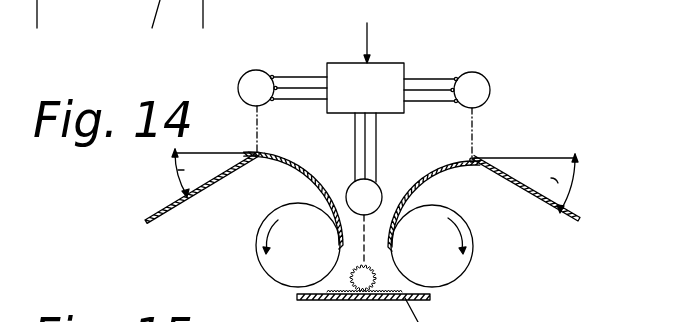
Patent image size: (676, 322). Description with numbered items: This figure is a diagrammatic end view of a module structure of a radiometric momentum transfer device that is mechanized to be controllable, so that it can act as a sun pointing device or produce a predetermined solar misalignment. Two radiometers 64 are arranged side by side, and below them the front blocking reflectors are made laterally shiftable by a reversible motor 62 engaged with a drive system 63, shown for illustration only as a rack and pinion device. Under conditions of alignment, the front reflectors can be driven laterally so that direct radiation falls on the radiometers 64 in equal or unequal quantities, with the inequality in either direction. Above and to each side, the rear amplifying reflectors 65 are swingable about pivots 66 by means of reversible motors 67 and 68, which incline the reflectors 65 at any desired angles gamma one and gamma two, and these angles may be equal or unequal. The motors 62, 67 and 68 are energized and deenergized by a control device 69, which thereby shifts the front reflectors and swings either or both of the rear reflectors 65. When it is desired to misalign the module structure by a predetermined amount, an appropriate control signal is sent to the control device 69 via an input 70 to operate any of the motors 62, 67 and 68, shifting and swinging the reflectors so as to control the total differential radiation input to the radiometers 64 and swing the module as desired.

The reversible motor 62 is at (380, 192).
The drive system 63 is at (353, 284).
The radiometers 64 is at (268, 262).
The rear amplifying reflectors 65 is at (173, 214).
The pivots 66 is at (257, 151).
The reversible motor 67 is at (247, 69).
The reversible motor 68 is at (490, 88).
The control device 69 is at (392, 72).
The input 70 is at (369, 33).